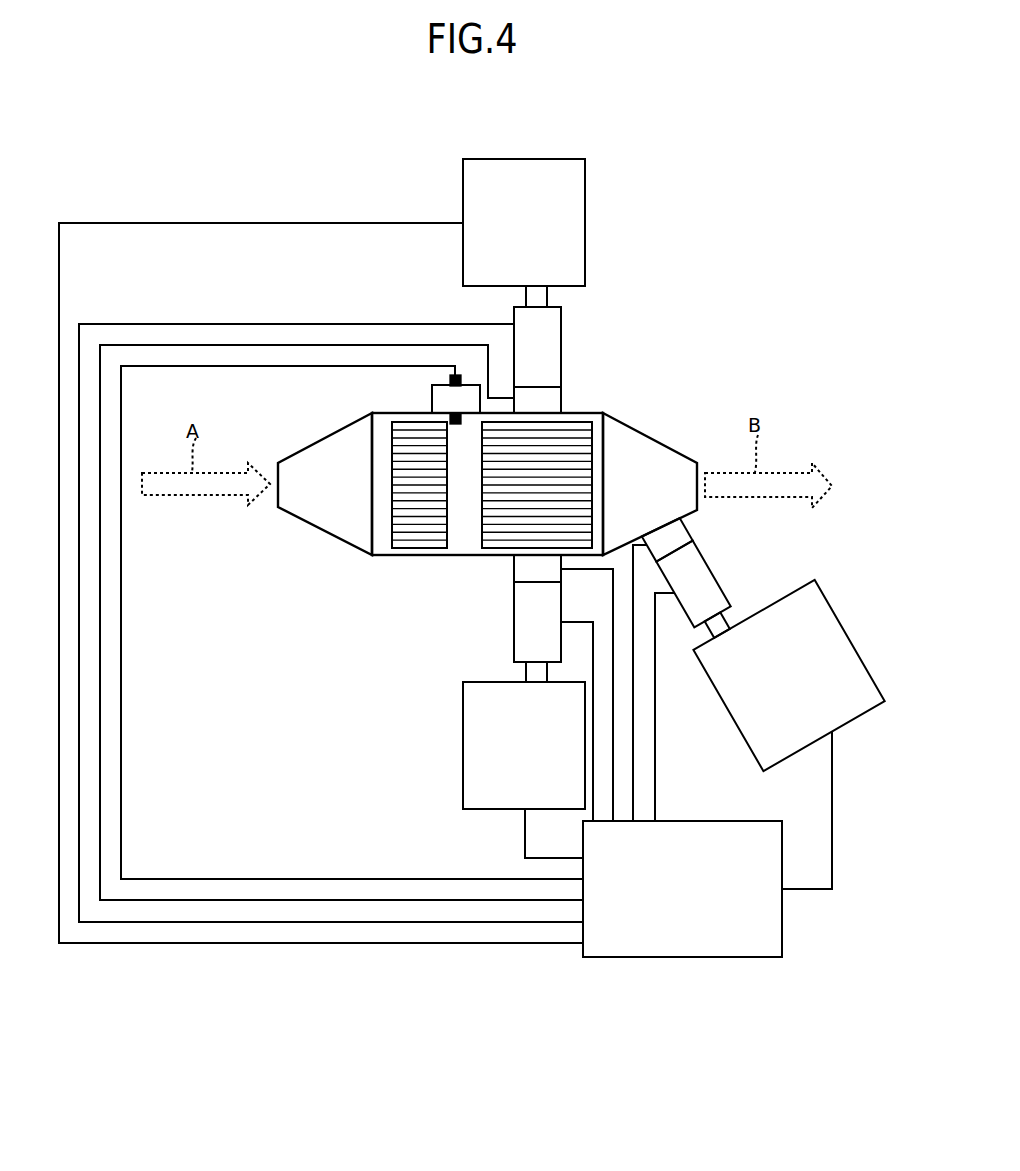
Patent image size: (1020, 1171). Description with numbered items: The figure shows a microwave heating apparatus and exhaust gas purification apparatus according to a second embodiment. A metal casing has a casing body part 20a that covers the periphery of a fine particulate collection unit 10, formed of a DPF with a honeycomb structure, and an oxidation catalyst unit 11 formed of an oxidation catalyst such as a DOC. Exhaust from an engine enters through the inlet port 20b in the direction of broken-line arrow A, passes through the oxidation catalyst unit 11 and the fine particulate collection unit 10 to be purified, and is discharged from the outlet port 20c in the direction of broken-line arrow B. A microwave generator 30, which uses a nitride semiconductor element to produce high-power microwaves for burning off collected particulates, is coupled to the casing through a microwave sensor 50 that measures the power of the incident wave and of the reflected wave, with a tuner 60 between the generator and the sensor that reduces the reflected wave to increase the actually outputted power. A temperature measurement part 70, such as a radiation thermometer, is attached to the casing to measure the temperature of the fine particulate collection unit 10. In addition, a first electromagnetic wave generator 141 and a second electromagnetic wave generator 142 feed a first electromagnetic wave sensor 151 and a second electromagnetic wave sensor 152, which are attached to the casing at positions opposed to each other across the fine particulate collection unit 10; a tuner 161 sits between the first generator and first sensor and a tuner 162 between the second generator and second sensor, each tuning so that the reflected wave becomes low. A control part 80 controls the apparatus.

The fine particulate collection unit 10 is at (488, 558).
The oxidation catalyst unit 11 is at (420, 556).
The casing body part 20a is at (583, 413).
The inlet port 20b is at (326, 440).
The outlet port 20c is at (650, 430).
The microwave generator 30 is at (838, 607).
The microwave sensor 50 is at (690, 521).
The tuner 60 is at (713, 567).
The temperature measurement part 70 is at (432, 398).
The control part 80 is at (680, 957).
The first electromagnetic wave generator 141 is at (502, 810).
The second electromagnetic wave generator 142 is at (502, 158).
The first electromagnetic wave sensor 151 is at (513, 573).
The second electromagnetic wave sensor 152 is at (561, 395).
The tuner 161 is at (513, 623).
The tuner 162 is at (561, 333).